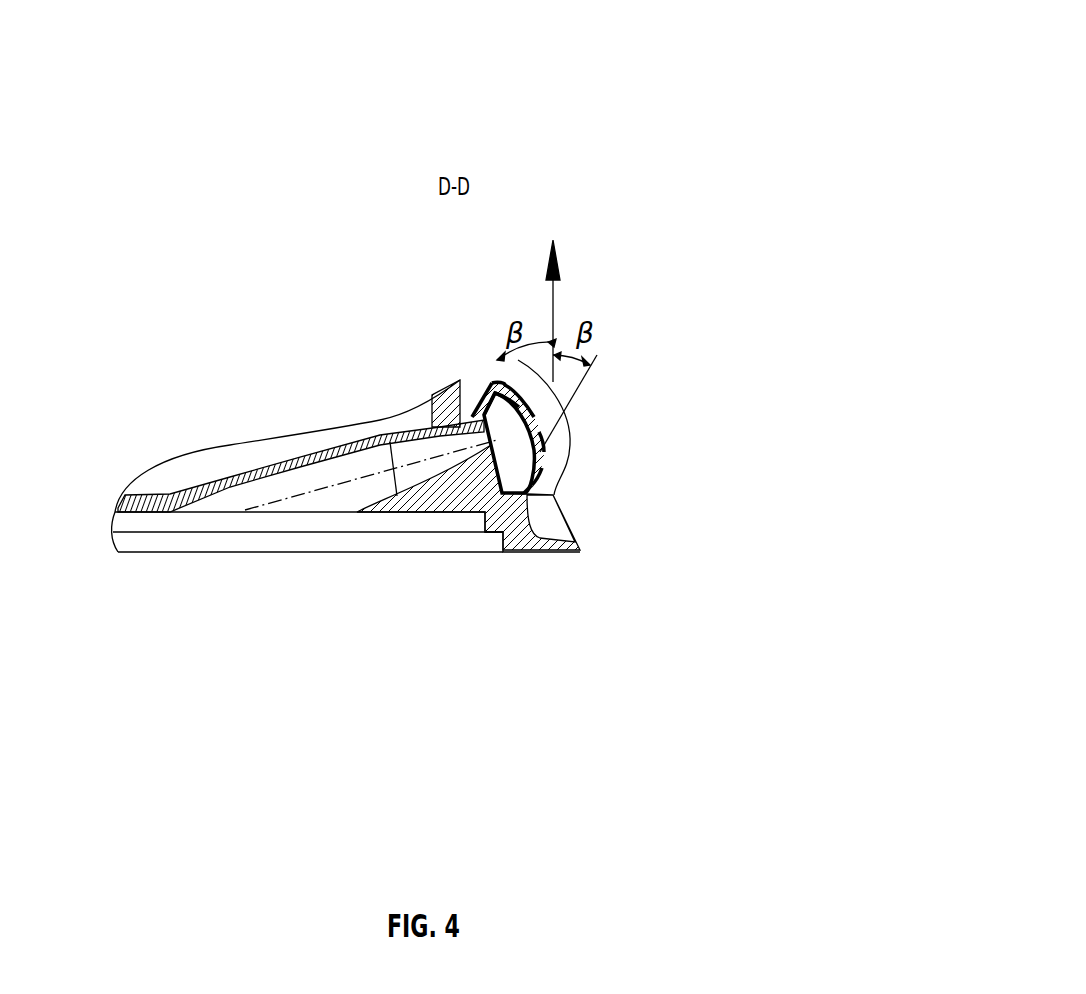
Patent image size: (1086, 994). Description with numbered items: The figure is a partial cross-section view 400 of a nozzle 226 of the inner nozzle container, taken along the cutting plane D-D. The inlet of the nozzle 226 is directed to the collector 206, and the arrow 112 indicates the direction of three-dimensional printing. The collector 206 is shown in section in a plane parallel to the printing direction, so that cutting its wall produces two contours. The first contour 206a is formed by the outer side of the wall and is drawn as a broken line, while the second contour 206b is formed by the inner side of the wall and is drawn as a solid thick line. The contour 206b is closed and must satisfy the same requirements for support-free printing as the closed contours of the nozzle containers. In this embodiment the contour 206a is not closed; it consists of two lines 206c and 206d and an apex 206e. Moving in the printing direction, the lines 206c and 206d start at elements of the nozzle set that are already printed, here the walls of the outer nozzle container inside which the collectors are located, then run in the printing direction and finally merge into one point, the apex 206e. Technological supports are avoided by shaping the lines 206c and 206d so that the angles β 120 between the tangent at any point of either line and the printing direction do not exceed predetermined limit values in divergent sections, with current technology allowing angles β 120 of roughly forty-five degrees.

The cross-section view 400 is at (975, 85).
The arrow 112 is at (553, 298).
The angle β 120 is at (547, 343).
The collector 206 is at (522, 453).
The first contour 206a is at (545, 453).
The second contour 206b is at (477, 403).
The line 206c is at (540, 478).
The line 206d is at (478, 400).
The apex 206e is at (496, 395).
The nozzle 226 is at (343, 470).